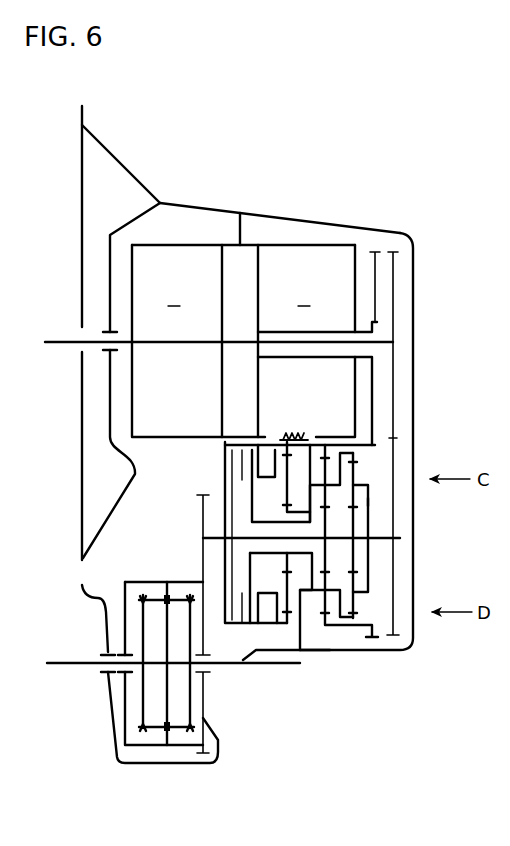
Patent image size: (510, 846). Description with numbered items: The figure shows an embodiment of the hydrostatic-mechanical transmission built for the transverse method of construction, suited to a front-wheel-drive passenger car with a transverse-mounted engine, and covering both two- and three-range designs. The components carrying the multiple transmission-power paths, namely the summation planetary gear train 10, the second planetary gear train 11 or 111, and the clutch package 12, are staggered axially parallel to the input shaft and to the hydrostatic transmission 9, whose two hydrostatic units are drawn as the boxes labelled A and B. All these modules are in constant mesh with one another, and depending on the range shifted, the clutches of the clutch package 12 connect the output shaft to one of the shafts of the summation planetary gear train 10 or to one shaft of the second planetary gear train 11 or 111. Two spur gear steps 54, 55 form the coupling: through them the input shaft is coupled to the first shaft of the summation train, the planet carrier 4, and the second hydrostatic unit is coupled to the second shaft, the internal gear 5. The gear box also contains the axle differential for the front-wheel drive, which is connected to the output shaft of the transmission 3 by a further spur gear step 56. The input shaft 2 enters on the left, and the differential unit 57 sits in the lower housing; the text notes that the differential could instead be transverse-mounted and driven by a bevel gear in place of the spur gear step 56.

The input shaft 2 is at (77, 341).
The output shaft of the transmission 3 is at (254, 355).
The planet carrier 4 is at (368, 500).
The internal gear 5 is at (325, 629).
The hydrostatic transmission 9 is at (276, 205).
The summation planetary gear train 10 is at (388, 658).
The second planetary gear train 11 is at (285, 434).
The clutch package 12 is at (254, 634).
The spur gear step 54 is at (397, 490).
The spur gear step 55 is at (375, 440).
The spur gear step 56 is at (206, 556).
The gear unit 57 is at (155, 770).
The second planetary gear train 111 is at (306, 661).